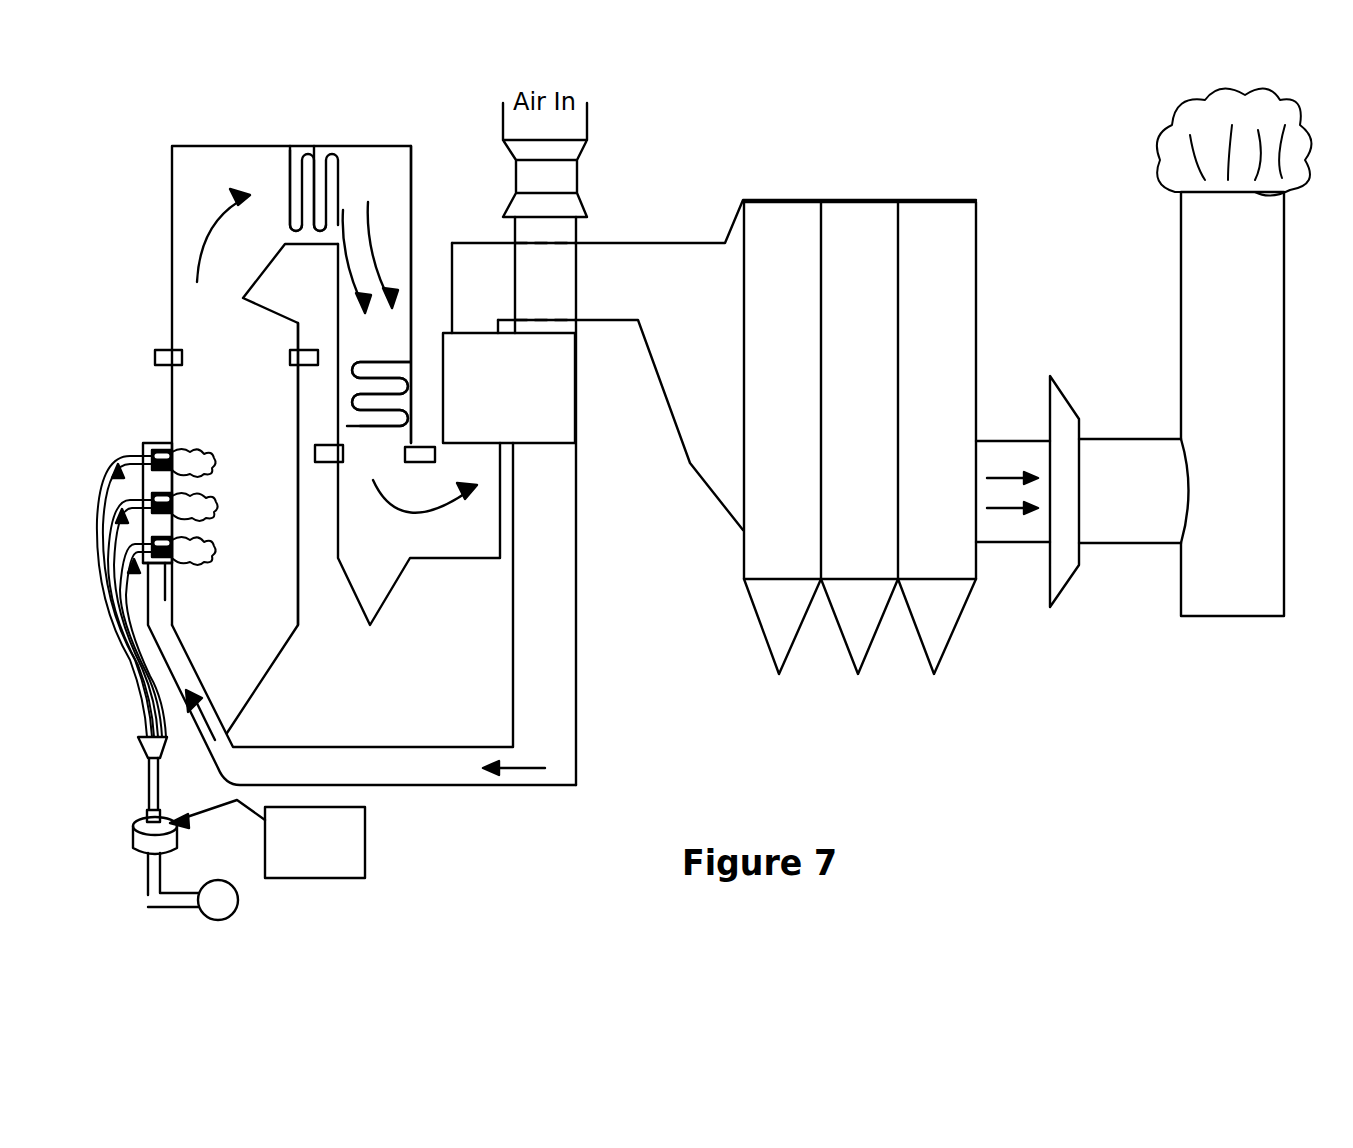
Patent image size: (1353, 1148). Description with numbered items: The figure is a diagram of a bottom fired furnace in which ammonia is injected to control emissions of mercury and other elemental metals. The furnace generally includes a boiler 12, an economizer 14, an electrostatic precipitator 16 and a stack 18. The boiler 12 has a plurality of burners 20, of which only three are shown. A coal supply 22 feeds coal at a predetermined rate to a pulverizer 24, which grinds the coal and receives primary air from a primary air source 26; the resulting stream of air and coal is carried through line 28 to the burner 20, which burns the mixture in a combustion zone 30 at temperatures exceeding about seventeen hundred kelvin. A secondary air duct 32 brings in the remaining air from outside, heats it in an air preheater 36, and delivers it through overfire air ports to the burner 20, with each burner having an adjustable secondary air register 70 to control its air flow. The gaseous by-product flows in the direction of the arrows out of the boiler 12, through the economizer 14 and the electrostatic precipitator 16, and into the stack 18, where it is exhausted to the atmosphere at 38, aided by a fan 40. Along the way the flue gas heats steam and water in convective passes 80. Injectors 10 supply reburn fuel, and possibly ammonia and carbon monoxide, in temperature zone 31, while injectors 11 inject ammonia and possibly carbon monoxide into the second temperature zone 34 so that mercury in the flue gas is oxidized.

The injectors 10 is at (158, 348).
The injectors 11 is at (320, 463).
The boiler 12 is at (172, 230).
The economizer 14 is at (405, 217).
The electrostatic precipitator 16 is at (973, 301).
The stack 18 is at (1275, 402).
The burners 20 is at (143, 445).
The coal supply 22 is at (357, 820).
The pulverizer 24 is at (135, 840).
The primary air source 26 is at (238, 898).
The line 28 is at (147, 777).
The combustion zone 30 is at (271, 474).
The temperature zone 31 is at (274, 488).
The secondary air duct 32 is at (552, 785).
The second temperature zone 34 is at (419, 434).
The air preheater 36 is at (565, 412).
The atmosphere exhaust 38 is at (1301, 165).
The fan 40 is at (1070, 575).
The secondary air register 70 is at (168, 558).
The convective passes 80 is at (310, 148).